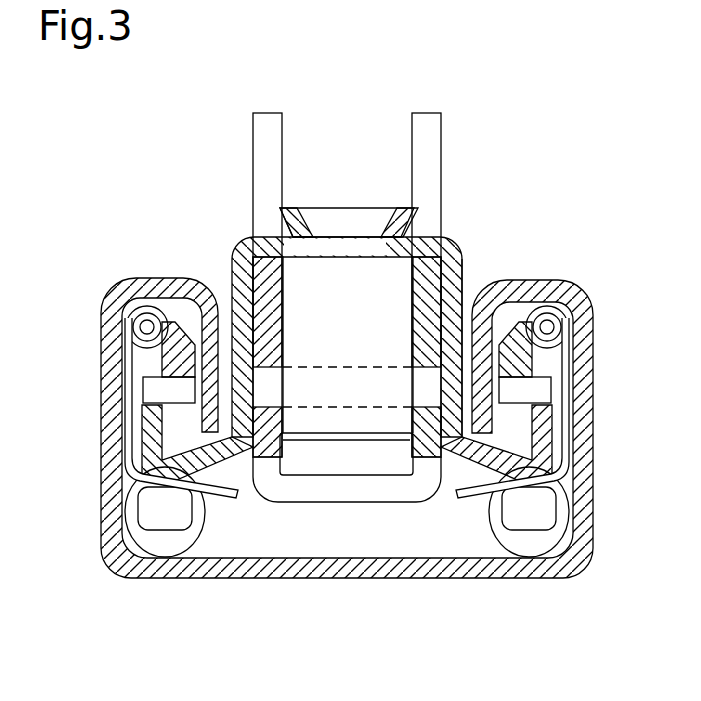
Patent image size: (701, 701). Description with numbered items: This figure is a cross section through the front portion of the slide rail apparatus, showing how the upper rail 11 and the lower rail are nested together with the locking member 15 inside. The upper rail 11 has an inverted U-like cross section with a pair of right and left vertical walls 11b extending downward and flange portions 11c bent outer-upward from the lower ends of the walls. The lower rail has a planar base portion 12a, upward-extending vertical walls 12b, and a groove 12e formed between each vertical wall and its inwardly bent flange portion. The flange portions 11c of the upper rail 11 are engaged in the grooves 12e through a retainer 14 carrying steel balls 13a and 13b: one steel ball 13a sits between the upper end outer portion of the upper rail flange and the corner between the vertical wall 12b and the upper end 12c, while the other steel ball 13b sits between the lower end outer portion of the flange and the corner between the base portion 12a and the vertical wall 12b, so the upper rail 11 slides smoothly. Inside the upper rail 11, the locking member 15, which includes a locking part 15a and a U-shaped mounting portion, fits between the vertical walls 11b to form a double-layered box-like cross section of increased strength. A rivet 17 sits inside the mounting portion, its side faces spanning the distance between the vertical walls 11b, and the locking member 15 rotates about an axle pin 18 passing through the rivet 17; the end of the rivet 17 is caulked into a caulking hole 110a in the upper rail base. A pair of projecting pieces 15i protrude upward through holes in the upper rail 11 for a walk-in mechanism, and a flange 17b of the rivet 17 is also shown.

The upper rail 11 is at (245, 262).
The vertical walls of the upper rail 11b is at (462, 300).
The flange portions of the upper rail 11c is at (505, 410).
The base portion of the lower rail 12a is at (322, 567).
The vertical walls of the lower rail 12b is at (108, 415).
The upper end of the lower rail 12c is at (162, 290).
The groove of the lower rail 12e is at (190, 365).
The steel ball 13a is at (147, 327).
The steel ball 13b is at (135, 537).
The retainer 14 is at (118, 467).
The locking member 15 is at (372, 490).
The locking part 15a is at (168, 390).
The projecting pieces 15i is at (267, 145).
The rivet 17 is at (338, 270).
The flange of insulator 17b is at (360, 220).
The axle pin 18 is at (273, 410).
The caulking hole 110a is at (305, 245).